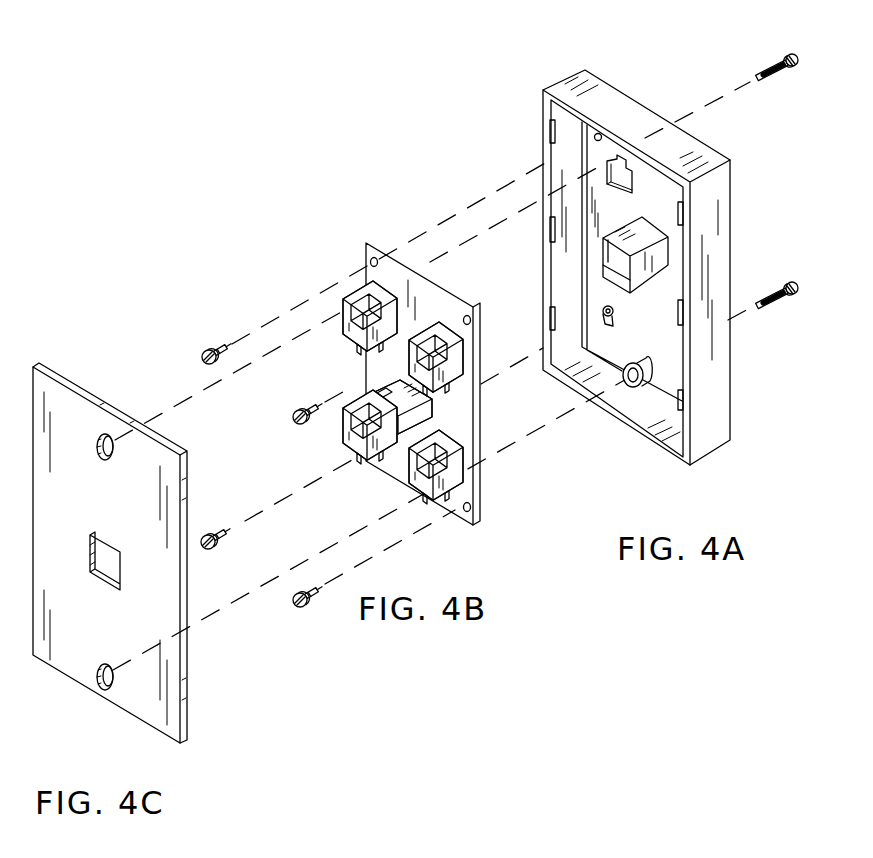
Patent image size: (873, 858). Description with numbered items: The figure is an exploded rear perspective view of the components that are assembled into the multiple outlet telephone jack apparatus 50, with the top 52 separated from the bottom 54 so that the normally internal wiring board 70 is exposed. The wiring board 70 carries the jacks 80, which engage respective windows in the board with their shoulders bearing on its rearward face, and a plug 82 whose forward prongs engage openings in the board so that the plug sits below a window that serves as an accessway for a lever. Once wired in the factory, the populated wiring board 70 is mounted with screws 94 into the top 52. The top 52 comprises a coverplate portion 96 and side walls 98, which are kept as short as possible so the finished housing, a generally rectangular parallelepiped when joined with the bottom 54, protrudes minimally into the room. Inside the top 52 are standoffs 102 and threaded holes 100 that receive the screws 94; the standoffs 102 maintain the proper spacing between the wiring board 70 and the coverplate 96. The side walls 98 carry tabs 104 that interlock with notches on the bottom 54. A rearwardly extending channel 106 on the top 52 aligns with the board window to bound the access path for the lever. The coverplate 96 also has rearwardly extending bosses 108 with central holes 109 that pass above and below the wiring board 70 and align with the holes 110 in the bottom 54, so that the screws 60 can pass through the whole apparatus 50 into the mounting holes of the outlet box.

In FIG. 4A, the top 52 is at (573, 78).
In FIG. 4A, the screws 60 is at (780, 56).
In FIG. 4A, the tabs 104 is at (548, 130).
In FIG. 4C, the holes 110 is at (105, 444).
In FIG. 4A, the holes 110 is at (610, 170).
In FIG. 4A, the channel 106 is at (663, 262).
In FIG. 4A, the side walls 98 is at (717, 268).
In FIG. 4A, the coverplate portion 96 is at (645, 334).
In FIG. 4A, the threaded holes 100 is at (600, 310).
In FIG. 4A, the standoffs 102 is at (582, 348).
In FIG. 4A, the central holes 109 is at (632, 388).
In FIG. 4A, the bosses 108 is at (648, 384).
In FIG. 4B, the multiple outlet telephone jack apparatus 50 is at (362, 290).
In FIG. 4B, the plug 82 is at (388, 396).
In FIG. 4B, the wiring board 70 is at (464, 432).
In FIG. 4B, the jacks 80 is at (470, 496).
In FIG. 4B, the screws 94 is at (208, 349).
In FIG. 4C, the bottom 54 is at (117, 520).